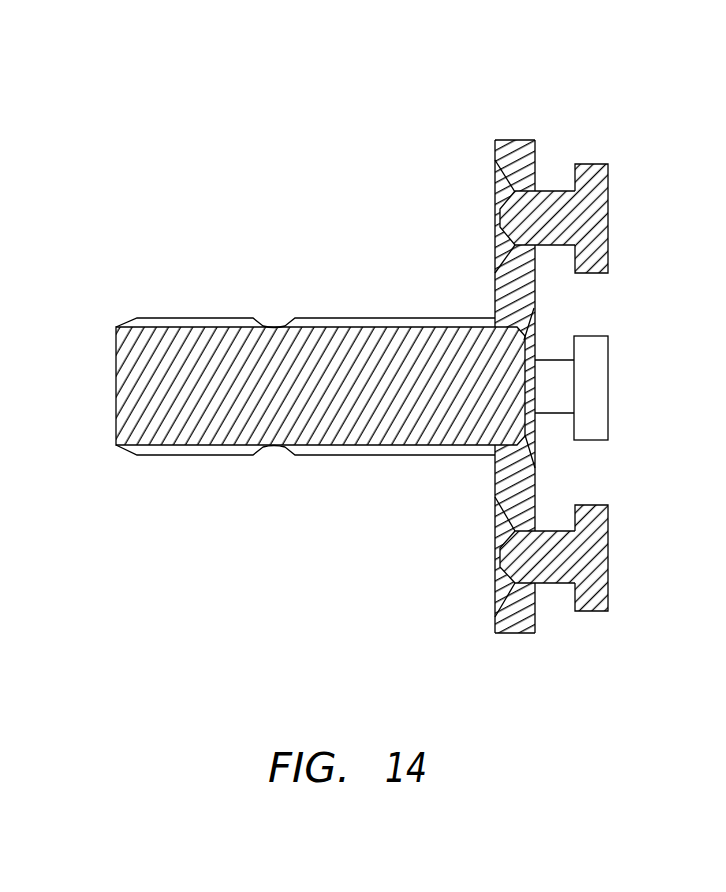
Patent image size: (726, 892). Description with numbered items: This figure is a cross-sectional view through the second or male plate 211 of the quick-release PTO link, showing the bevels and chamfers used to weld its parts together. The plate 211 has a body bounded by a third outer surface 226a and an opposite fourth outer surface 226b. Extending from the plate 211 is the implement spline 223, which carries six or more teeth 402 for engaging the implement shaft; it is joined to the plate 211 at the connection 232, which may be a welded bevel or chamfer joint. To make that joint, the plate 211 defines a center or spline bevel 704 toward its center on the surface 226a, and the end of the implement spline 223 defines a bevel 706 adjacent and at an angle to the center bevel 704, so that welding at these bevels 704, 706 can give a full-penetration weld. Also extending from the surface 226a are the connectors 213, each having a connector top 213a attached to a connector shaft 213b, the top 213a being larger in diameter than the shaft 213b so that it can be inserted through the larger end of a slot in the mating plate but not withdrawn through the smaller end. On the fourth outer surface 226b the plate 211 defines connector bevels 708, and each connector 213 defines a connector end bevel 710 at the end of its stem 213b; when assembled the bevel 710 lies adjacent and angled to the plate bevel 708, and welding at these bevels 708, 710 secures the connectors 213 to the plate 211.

The second plate 211 is at (512, 635).
The connector 213 is at (607, 197).
The connector top 213a is at (608, 218).
The connector shaft 213b is at (546, 192).
The third outer surface 226a is at (535, 614).
The fourth outer surface 226b is at (495, 474).
The teeth 402 is at (295, 425).
The implement spline 223 is at (115, 433).
The connector bevel 708 is at (495, 186).
The connector end bevel 710 is at (495, 238).
The spline end bevel 706 is at (525, 335).
The center bevel 704 is at (535, 453).
The connection 232 is at (548, 311).